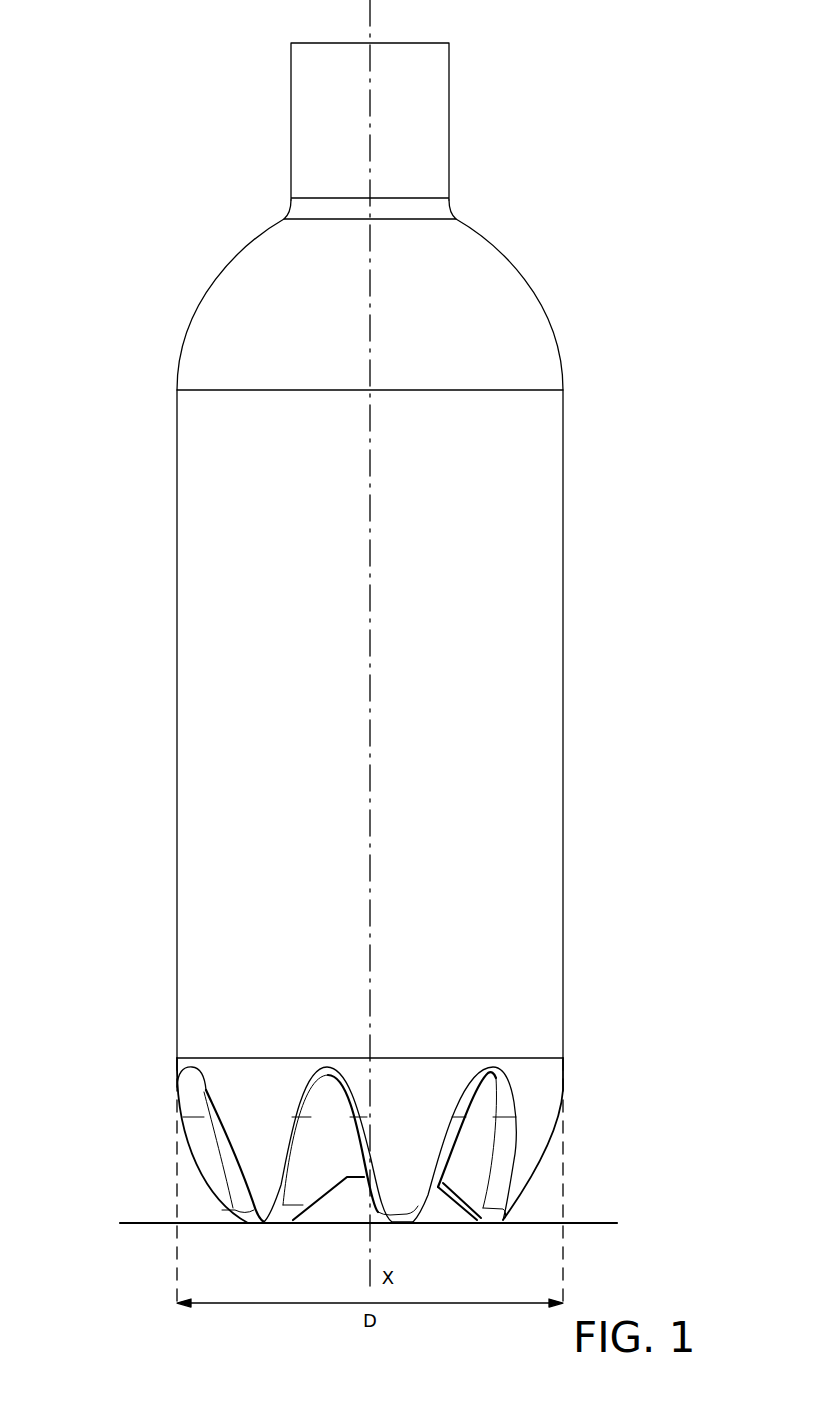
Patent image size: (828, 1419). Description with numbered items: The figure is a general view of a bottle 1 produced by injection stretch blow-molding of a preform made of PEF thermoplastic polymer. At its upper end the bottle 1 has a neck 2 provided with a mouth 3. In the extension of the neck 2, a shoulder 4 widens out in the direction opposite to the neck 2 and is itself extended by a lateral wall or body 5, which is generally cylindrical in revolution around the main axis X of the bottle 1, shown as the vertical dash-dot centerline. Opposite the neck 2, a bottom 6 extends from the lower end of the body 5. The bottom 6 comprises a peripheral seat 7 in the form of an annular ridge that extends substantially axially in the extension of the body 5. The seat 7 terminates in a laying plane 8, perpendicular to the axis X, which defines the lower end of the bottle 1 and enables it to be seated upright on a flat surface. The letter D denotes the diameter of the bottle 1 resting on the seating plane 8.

The bottle 1 is at (636, 586).
The neck 2 is at (456, 219).
The mouth 3 is at (405, 43).
The shoulder 4 is at (185, 333).
The body 5 is at (157, 390).
The bottom 6 is at (562, 1102).
The peripheral seat 7 is at (516, 1208).
The laying plane 8 is at (518, 1224).